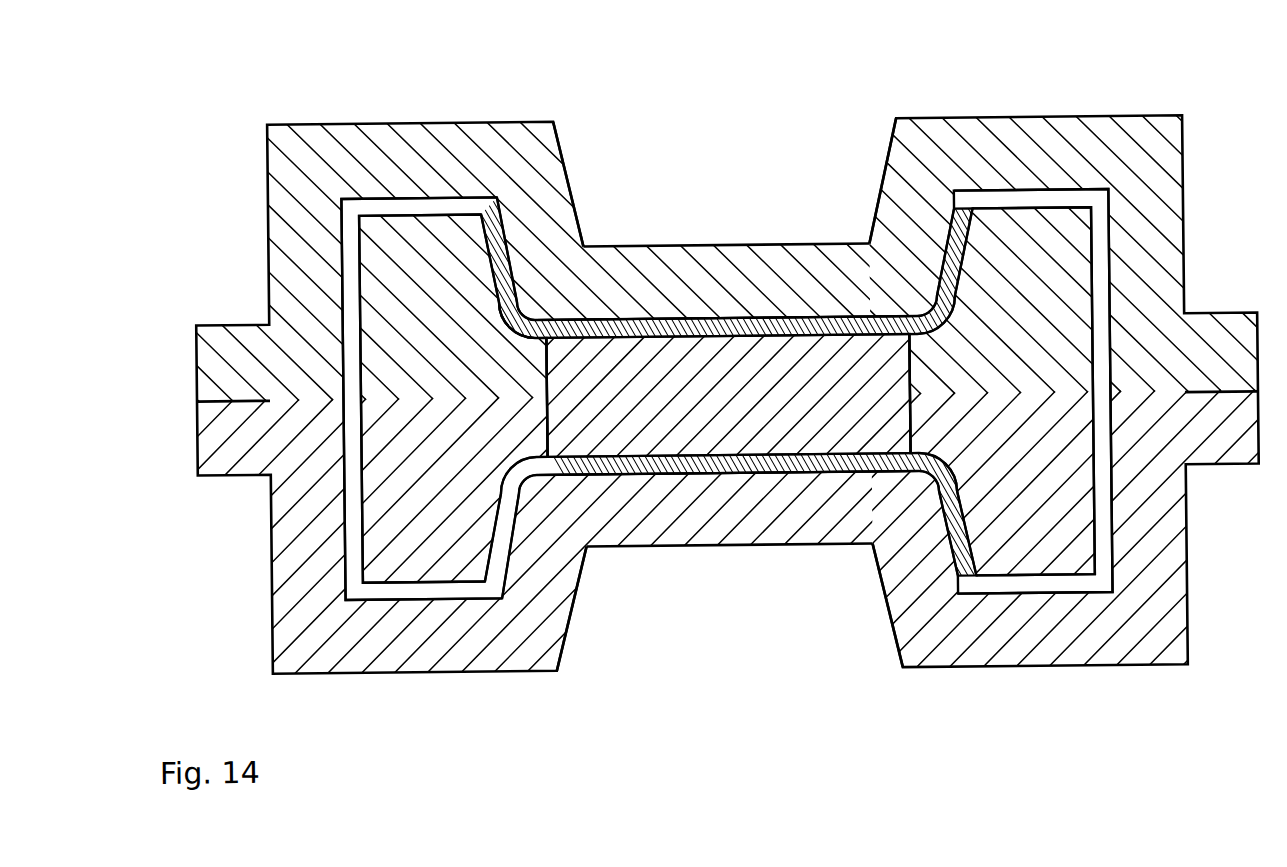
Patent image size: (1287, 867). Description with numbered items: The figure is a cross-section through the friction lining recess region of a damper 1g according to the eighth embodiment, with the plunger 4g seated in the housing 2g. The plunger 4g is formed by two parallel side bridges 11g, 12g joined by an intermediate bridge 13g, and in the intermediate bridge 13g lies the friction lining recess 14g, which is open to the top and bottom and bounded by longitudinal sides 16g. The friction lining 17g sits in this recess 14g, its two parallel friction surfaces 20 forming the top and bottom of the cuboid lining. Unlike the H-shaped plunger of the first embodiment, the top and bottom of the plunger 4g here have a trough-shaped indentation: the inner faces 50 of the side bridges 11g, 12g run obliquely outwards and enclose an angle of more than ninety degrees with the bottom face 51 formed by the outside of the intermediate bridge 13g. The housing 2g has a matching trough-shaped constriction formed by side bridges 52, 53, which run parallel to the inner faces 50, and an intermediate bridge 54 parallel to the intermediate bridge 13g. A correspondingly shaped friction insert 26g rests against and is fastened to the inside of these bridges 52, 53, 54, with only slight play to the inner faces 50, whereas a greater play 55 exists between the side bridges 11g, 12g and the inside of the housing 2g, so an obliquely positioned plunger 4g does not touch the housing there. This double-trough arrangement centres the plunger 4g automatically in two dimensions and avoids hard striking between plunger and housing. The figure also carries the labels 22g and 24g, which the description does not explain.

The sealing arrangement 1g is at (241, 90).
The housing 2g is at (1035, 131).
The plunger 4g is at (403, 592).
The side bridge 11g is at (375, 296).
The side bridge 12g is at (1047, 221).
The intermediate bridge 13g is at (555, 668).
The friction lining recess 14g is at (900, 668).
The longitudinal side 16g is at (609, 267).
The friction lining 17g is at (757, 445).
The friction surface 20 is at (762, 325).
The gap 22g is at (340, 578).
The recess wall 24g is at (345, 225).
The friction insert 26g is at (549, 318).
The inner face 50 is at (513, 289).
The bottom face 51 is at (535, 353).
The side bridge 52 is at (565, 180).
The side bridge 53 is at (889, 208).
The intermediate bridge 54 is at (693, 243).
The play 55 is at (405, 205).